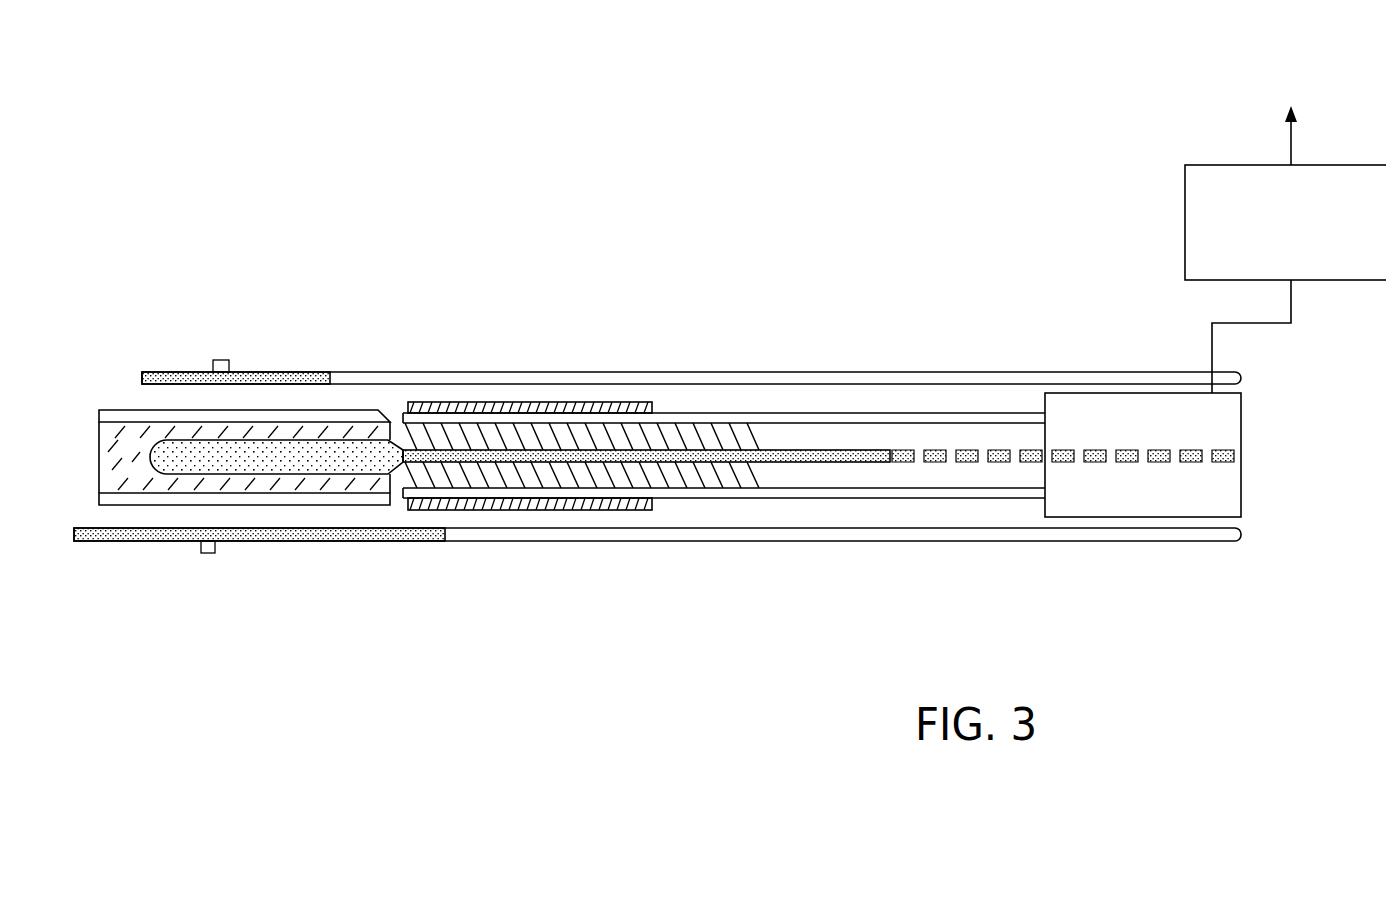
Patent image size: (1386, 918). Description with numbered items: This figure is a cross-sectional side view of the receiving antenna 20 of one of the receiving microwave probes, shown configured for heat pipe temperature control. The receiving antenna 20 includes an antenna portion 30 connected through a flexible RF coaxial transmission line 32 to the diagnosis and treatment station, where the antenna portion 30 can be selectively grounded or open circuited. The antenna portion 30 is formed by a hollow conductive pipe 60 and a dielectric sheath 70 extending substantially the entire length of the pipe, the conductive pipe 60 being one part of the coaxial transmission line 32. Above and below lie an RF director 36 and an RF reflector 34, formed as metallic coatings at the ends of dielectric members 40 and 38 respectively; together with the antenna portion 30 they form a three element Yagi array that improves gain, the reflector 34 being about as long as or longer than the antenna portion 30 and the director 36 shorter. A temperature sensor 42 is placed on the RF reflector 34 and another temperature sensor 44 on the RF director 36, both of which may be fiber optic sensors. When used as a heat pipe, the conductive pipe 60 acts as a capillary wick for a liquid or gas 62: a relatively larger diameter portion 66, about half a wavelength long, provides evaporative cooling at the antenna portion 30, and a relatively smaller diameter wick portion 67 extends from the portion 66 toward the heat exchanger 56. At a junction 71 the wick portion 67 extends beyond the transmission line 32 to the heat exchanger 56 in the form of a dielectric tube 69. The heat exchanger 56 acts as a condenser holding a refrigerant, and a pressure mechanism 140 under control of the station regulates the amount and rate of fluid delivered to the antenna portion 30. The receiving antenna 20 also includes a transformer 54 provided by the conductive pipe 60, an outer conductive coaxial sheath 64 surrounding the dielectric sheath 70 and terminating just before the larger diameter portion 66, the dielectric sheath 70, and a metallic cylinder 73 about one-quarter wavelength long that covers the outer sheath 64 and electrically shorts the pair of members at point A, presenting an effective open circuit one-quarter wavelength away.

The receiving antenna 20 is at (447, 290).
The antenna portion 30 is at (237, 552).
The coaxial transmission line 32 is at (730, 413).
The RF reflector 34 is at (343, 542).
The RF director 36 is at (291, 372).
The dielectric member 38 is at (1063, 542).
The dielectric member 40 is at (855, 383).
The temperature sensor 42 is at (209, 553).
The temperature sensor 44 is at (223, 360).
The transformer 54 is at (535, 490).
The heat exchanger 56 is at (1105, 392).
The hollow conductive pipe 60 is at (848, 463).
The liquid or gas 62 is at (288, 462).
The outer conductive coaxial sheath 64 is at (735, 492).
The larger diameter portion 66 is at (187, 476).
The wick portion 67 is at (784, 478).
The dielectric tube 69 is at (985, 447).
The dielectric sheath 70 is at (580, 480).
The junction 71 is at (915, 478).
The metallic cylinder 73 is at (560, 405).
The pressure mechanism 140 is at (1185, 208).
The point A is at (664, 403).